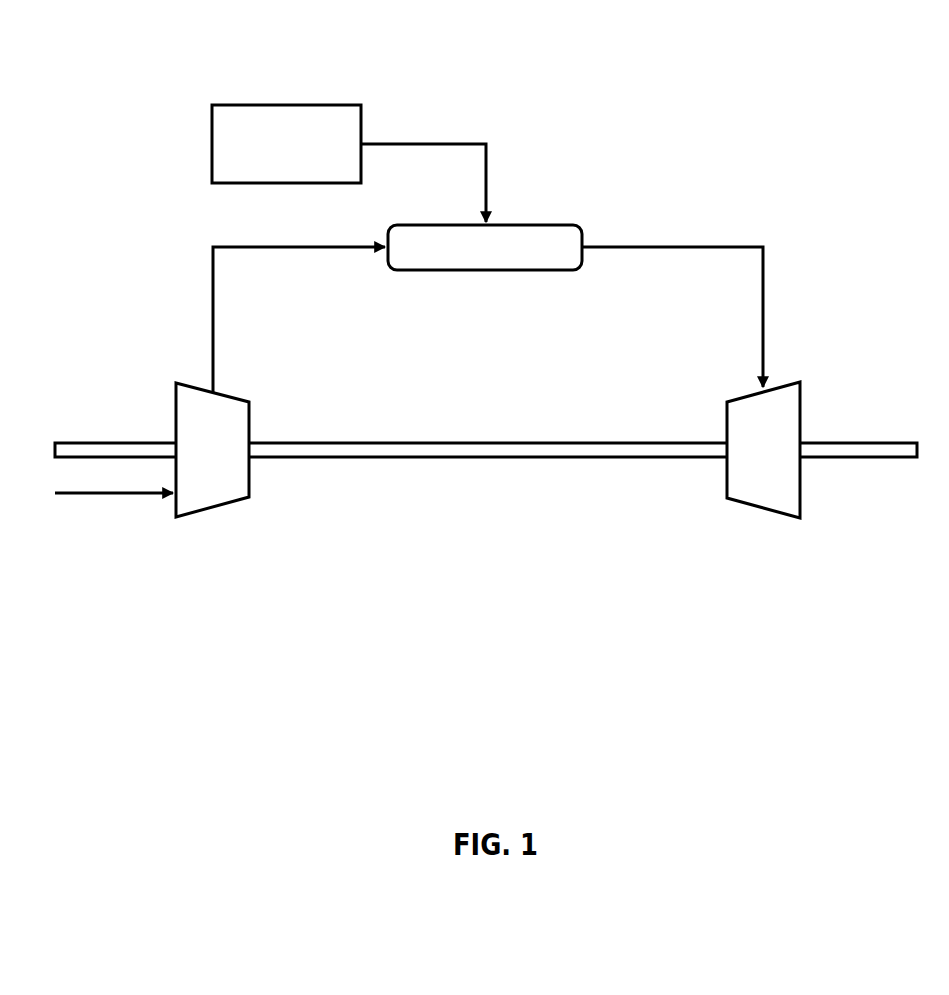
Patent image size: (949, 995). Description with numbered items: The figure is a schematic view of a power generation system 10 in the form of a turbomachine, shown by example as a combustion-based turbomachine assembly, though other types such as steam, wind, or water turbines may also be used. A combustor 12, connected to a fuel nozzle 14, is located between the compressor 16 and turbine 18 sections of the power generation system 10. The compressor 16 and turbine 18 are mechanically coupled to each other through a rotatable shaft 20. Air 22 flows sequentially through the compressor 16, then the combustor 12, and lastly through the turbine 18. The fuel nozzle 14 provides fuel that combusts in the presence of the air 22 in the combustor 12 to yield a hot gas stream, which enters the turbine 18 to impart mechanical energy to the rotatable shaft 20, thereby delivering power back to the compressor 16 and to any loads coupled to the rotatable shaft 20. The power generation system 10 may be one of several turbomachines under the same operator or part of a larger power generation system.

The power generation system 10 is at (90, 84).
The combustor 12 is at (501, 261).
The fuel nozzle 14 is at (301, 157).
The compressor 16 is at (228, 464).
The turbine 18 is at (779, 464).
The rotatable shaft 20 is at (491, 458).
The air 22 is at (123, 496).